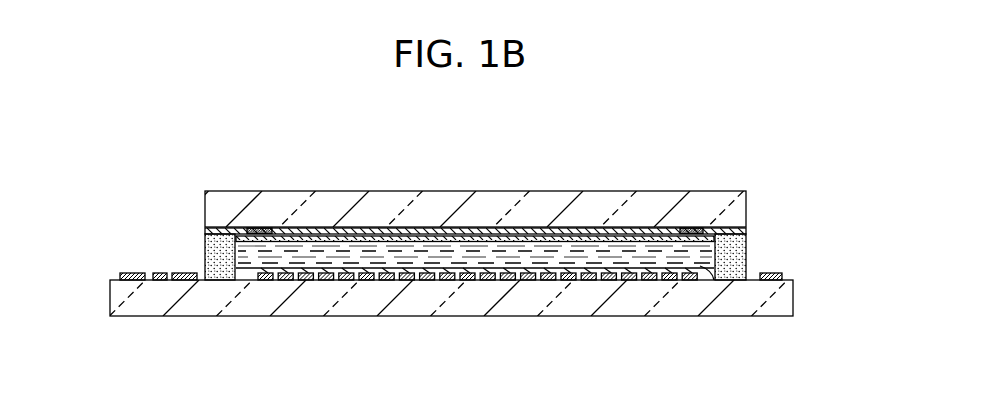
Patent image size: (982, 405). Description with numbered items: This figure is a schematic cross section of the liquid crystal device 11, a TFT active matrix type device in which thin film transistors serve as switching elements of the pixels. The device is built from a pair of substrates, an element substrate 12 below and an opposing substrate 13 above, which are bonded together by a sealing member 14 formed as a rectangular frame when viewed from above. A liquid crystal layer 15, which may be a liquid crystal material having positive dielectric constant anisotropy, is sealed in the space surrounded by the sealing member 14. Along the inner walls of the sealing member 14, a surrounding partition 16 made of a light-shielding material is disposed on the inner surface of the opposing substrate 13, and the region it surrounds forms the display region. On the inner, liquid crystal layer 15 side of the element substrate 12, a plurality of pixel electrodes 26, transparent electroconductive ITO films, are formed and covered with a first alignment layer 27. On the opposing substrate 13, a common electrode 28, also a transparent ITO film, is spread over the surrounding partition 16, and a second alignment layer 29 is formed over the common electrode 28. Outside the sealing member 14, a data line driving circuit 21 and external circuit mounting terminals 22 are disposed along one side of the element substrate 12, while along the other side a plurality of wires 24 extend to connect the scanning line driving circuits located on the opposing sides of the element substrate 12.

The liquid crystal device 11 is at (650, 124).
The element substrate 12 is at (610, 305).
The opposing substrate 13 is at (446, 198).
The sealing member 14 is at (206, 250).
The liquid crystal layer 15 is at (244, 268).
The surrounding partition 16 is at (272, 228).
The data line driving circuit 21 is at (178, 273).
The external circuit mounting terminals 22 is at (125, 273).
The wires 24 is at (771, 281).
The pixel electrodes 26 is at (326, 277).
The first alignment layer 27 is at (714, 280).
The common electrode 28 is at (555, 232).
The second alignment layer 29 is at (326, 238).